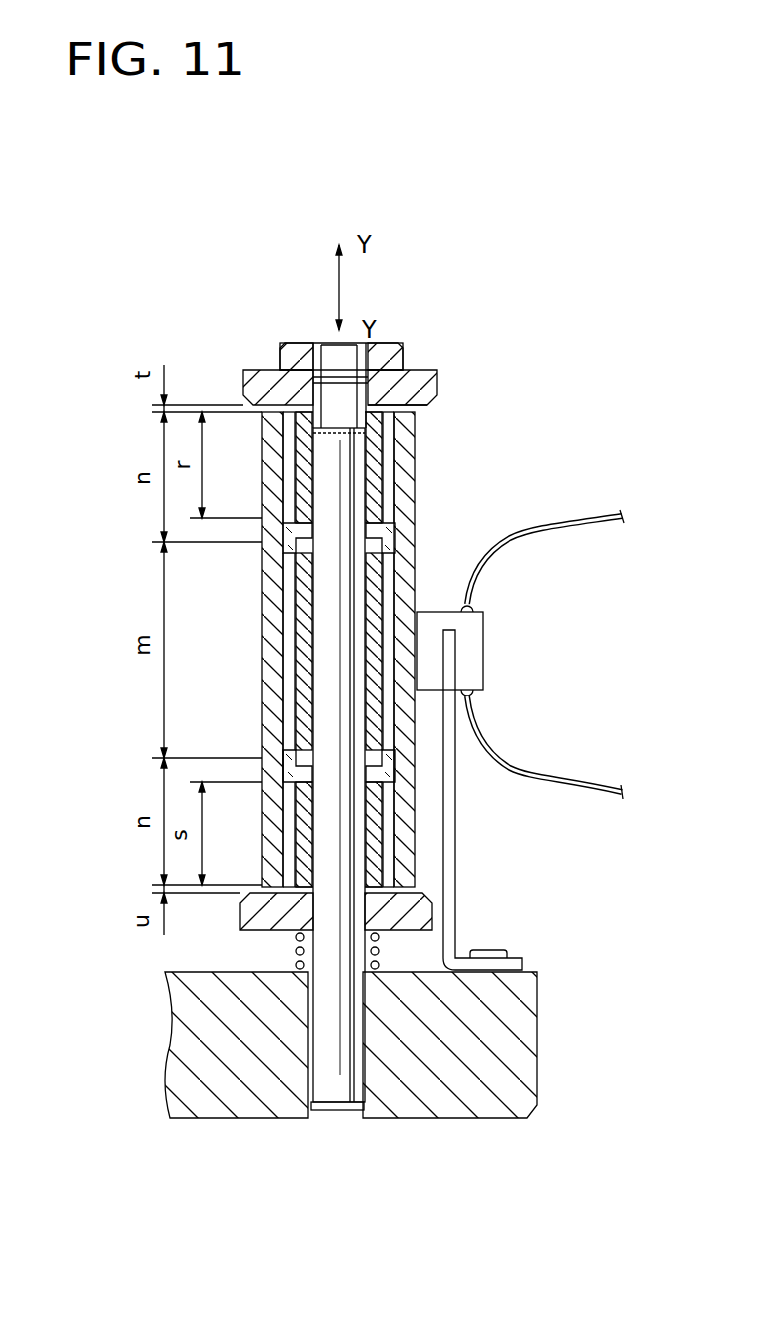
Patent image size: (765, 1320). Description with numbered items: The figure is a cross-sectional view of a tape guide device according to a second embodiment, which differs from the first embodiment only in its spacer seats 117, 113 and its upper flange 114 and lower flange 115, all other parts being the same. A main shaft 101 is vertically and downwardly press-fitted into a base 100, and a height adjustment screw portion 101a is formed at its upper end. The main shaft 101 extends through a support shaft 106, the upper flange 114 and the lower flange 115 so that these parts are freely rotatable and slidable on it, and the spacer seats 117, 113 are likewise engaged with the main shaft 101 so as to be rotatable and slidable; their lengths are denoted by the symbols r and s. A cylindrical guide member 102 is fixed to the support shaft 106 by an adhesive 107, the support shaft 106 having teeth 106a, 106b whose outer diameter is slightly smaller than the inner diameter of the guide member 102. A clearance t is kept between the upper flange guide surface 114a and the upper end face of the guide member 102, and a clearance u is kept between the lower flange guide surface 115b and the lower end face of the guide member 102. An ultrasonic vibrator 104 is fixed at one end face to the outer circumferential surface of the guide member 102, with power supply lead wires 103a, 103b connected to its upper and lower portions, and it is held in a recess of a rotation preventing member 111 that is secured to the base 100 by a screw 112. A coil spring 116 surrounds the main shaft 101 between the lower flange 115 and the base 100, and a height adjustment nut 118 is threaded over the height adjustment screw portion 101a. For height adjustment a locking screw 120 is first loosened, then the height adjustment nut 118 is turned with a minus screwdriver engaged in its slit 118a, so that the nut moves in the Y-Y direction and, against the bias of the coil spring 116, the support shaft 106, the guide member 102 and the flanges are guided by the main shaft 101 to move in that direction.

The base 100 is at (187, 1120).
The main shaft 101 is at (333, 1110).
The height adjustment screw portion 101a is at (406, 388).
The guide member 102 is at (262, 667).
The power supply lead wire 103a is at (598, 512).
The power supply lead wire 103b is at (592, 783).
The ultrasonic vibrator 104 is at (485, 658).
The support shaft 106 is at (297, 593).
The tooth 106a is at (400, 534).
The tooth 106b is at (392, 792).
The adhesive 107 is at (290, 522).
The rotation preventing member 111 is at (456, 786).
The screw 112 is at (495, 948).
The spacer seat 113 is at (270, 850).
The upper flange 114 is at (406, 395).
The upper flange guide surface 114a is at (427, 405).
The lower flange 115 is at (371, 918).
The lower flange guide surface 115b is at (415, 883).
The coil spring 116 is at (293, 950).
The spacer seat 117 is at (262, 428).
The height adjustment nut 118 is at (327, 303).
The slit 118a is at (300, 345).
The locking screw 120 is at (333, 345).